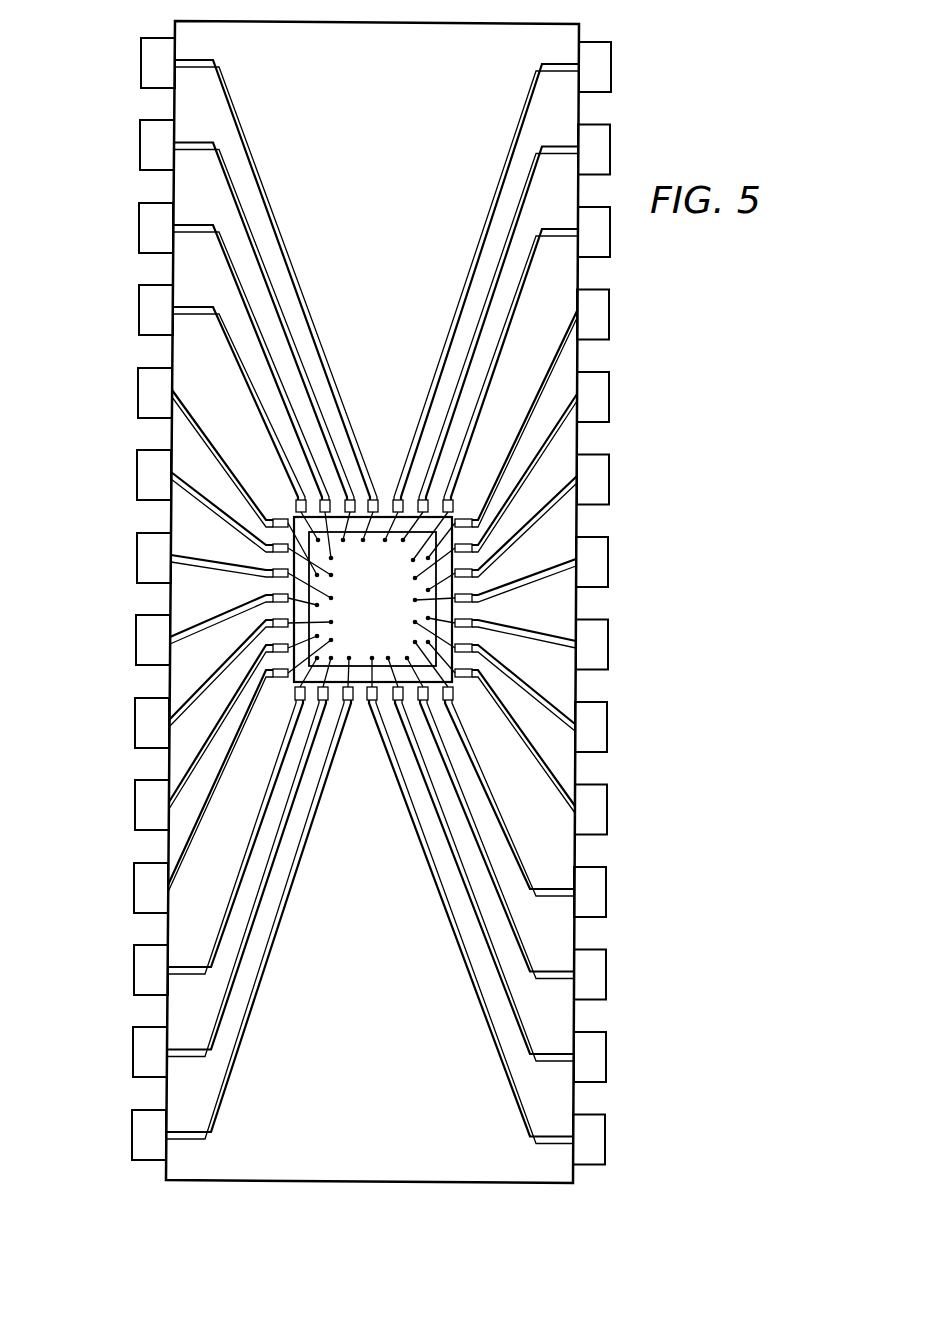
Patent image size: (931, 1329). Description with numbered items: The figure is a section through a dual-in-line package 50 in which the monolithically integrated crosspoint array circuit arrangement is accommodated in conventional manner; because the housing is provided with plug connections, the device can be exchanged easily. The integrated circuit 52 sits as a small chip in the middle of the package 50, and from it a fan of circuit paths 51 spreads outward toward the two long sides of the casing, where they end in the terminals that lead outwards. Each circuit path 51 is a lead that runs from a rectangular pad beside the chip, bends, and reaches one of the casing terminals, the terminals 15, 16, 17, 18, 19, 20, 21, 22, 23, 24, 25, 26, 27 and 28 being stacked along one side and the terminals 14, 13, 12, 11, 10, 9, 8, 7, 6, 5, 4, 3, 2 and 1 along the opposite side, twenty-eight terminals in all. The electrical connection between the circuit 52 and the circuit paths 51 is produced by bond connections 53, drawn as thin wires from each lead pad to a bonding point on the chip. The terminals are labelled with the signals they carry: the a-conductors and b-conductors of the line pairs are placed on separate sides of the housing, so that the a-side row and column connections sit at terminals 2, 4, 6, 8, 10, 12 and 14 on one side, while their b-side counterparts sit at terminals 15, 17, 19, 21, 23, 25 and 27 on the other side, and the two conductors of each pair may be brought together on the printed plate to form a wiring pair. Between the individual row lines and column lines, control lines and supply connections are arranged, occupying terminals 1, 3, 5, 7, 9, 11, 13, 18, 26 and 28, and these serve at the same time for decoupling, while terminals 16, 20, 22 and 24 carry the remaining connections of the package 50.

The package 50 is at (580, 27).
The circuit paths 51 is at (257, 985).
The integrated circuit 52 is at (388, 613).
The bond connections 53 is at (372, 684).
The terminal 1 is at (495, 911).
The terminal 2 is at (516, 870).
The terminal 3 is at (520, 829).
The terminal 4 is at (529, 779).
The terminal 5 is at (531, 738).
The terminal 6 is at (530, 687).
The terminal 7 is at (532, 644).
The terminal 8 is at (530, 569).
The terminal 9 is at (532, 523).
The terminal 10 is at (531, 475).
The terminal 11 is at (532, 424).
The terminal 12 is at (530, 383).
The terminal 13 is at (521, 333).
The terminal 14 is at (517, 291).
The terminal 15 is at (239, 289).
The terminal 16 is at (229, 330).
The terminal 17 is at (216, 380).
The terminal 18 is at (206, 412).
The terminal 19 is at (208, 471).
The terminal 20 is at (216, 512).
The terminal 21 is at (215, 565).
The terminal 22 is at (213, 629).
The terminal 23 is at (214, 683).
The terminal 24 is at (215, 733).
The terminal 25 is at (213, 776).
The terminal 26 is at (210, 826).
The terminal 27 is at (211, 867).
The terminal 28 is at (216, 909).